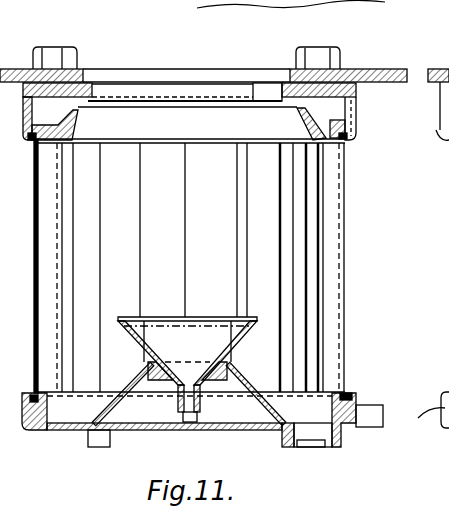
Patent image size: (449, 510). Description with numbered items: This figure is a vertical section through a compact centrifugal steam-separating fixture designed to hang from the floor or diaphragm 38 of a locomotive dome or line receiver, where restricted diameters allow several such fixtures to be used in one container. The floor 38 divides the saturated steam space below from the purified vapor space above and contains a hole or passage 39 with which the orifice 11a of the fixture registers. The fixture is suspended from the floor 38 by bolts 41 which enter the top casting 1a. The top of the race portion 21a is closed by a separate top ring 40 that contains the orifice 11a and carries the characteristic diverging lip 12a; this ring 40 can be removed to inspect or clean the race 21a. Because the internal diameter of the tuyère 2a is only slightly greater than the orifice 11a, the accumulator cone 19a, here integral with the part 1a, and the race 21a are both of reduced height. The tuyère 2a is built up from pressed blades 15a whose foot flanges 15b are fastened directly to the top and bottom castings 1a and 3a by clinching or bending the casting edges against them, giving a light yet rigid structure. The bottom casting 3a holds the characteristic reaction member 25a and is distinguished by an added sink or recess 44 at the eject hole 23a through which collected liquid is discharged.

The top casting 1a is at (355, 131).
The tuyère 2a is at (66, 257).
The bottom casting 3a is at (383, 418).
The orifice 11a is at (169, 92).
The diverging lip 12a is at (263, 82).
The pressed blades 15a is at (50, 290).
The foot flanges 15b is at (30, 138).
The accumulator cone 19a is at (222, 120).
The race portion 21a is at (48, 110).
The eject hole 23a is at (312, 447).
The reaction member 25a is at (189, 371).
The floor or diaphragm 38 is at (367, 68).
The hole or passage 39 is at (210, 75).
The top ring 40 is at (55, 90).
The bolts 41 is at (322, 53).
The sink or recess 44 is at (280, 446).